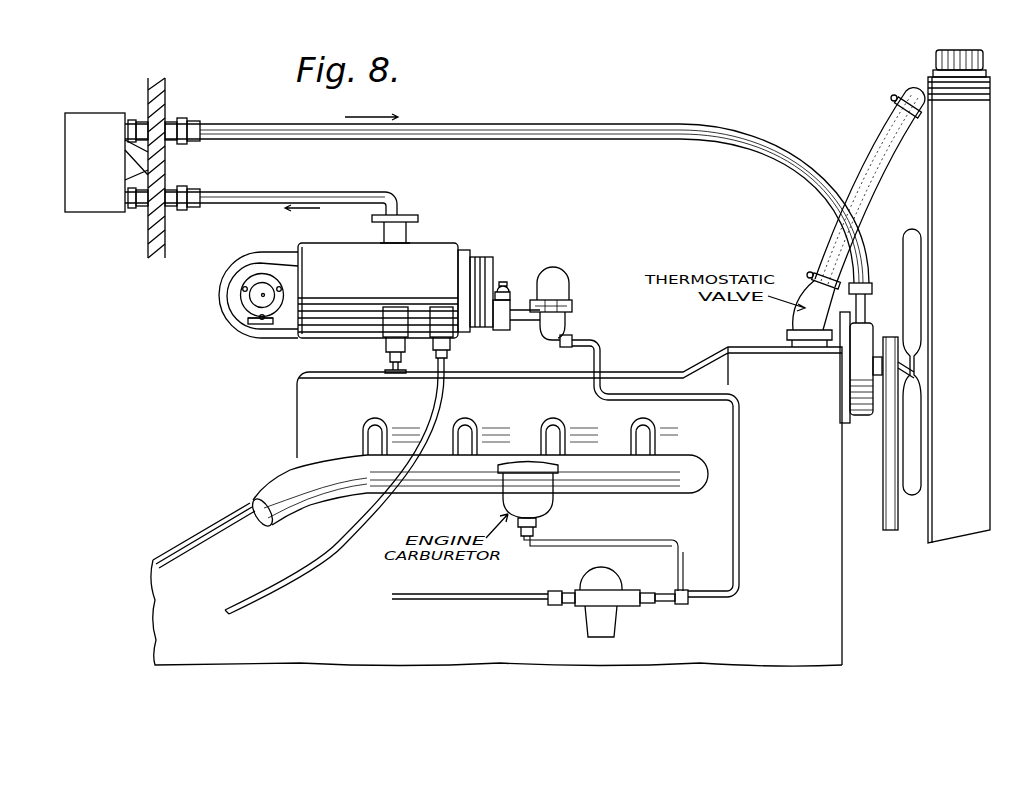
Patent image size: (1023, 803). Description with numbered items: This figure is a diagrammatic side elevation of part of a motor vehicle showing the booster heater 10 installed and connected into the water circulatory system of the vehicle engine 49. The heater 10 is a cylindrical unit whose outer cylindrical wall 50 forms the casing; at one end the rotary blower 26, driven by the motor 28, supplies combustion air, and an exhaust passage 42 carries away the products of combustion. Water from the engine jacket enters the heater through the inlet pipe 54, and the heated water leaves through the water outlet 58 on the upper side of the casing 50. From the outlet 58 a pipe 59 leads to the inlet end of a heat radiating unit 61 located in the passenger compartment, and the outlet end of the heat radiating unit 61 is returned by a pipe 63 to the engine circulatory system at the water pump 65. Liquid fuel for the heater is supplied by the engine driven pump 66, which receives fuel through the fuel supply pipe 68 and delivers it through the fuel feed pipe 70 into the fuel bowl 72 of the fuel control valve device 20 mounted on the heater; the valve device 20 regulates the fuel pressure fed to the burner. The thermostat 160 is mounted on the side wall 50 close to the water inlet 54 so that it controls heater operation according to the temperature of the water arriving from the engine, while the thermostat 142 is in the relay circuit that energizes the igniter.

The heater 10 is at (419, 273).
The fuel control valve device 20 is at (572, 287).
The rotary blower 26 is at (222, 306).
The motor 28 is at (244, 322).
The exhaust passage 42 is at (446, 386).
The vehicle engine 49 is at (648, 378).
The outer cylindrical wall 50 is at (342, 250).
The inlet pipe 54 is at (387, 362).
The water outlet 58 is at (412, 226).
The pipe 59 is at (300, 192).
The heat radiating unit 61 is at (65, 172).
The pipe 63 is at (470, 128).
The water pump 65 is at (845, 398).
The engine driven pump 66 is at (612, 582).
The fuel supply pipe 68 is at (466, 604).
The fuel feed pipe 70 is at (740, 504).
The fuel bowl 72 is at (567, 334).
The thermostat 142 is at (440, 318).
The thermostat 160 is at (385, 318).